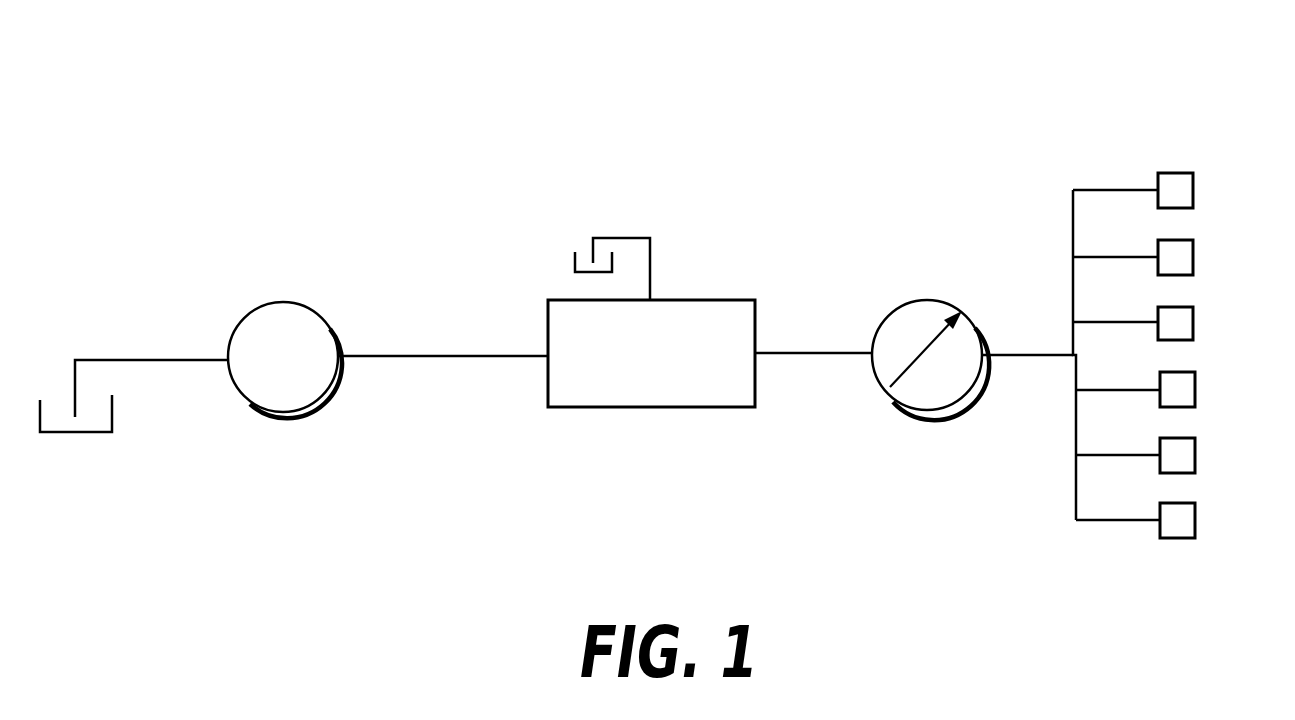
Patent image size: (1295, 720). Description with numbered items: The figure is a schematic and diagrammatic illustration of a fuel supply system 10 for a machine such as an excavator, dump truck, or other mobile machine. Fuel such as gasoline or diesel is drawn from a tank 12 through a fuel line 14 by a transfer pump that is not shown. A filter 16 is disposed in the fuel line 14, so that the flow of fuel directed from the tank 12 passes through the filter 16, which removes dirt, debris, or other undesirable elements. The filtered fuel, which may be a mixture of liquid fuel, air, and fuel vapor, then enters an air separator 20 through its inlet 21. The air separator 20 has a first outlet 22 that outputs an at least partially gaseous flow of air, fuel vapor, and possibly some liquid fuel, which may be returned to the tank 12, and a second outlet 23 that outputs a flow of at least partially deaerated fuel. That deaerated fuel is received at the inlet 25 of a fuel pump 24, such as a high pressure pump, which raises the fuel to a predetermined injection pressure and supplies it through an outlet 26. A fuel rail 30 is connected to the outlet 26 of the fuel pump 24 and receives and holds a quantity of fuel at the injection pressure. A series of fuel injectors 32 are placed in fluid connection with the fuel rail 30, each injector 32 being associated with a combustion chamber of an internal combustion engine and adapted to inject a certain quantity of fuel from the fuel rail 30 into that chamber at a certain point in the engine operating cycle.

The fuel supply system 10 is at (719, 126).
The tank 12 is at (77, 435).
The fuel line 14 is at (128, 356).
The filter 16 is at (304, 372).
The air separator 20 is at (705, 409).
The inlet 21 is at (548, 355).
The first outlet 22 is at (657, 298).
The second outlet 23 is at (760, 350).
The fuel pump 24 is at (922, 298).
The inlet 25 is at (870, 355).
The outlet 26 is at (985, 352).
The fuel rail 30 is at (1073, 226).
The fuel injectors 32 is at (1193, 192).